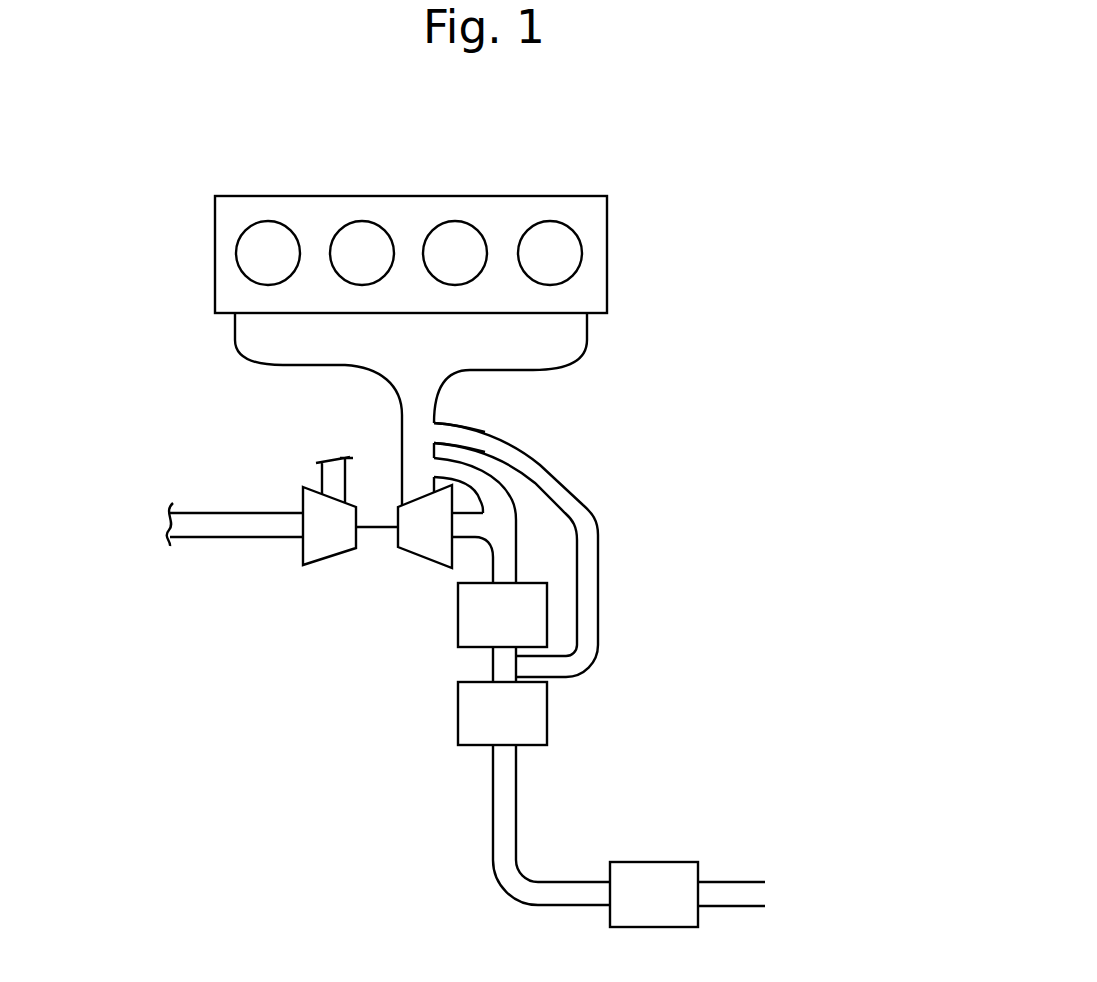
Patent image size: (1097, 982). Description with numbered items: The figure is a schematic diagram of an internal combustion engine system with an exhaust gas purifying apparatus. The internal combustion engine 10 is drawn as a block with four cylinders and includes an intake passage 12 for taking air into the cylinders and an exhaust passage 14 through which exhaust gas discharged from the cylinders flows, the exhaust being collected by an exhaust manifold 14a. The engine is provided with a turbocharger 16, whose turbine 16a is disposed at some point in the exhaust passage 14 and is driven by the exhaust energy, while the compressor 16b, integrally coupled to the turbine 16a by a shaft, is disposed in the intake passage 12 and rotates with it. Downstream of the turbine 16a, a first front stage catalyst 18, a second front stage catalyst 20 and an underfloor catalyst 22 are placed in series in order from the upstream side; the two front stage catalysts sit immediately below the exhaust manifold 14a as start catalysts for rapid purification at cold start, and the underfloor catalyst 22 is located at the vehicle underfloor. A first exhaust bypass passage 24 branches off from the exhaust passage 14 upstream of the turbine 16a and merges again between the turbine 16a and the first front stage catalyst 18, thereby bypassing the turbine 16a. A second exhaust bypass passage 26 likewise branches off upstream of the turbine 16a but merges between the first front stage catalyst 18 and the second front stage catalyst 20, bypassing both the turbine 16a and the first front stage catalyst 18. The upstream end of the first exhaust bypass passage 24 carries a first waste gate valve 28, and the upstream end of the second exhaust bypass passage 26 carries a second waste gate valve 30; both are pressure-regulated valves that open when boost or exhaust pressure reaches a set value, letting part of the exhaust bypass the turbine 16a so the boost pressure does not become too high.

The internal combustion engine 10 is at (599, 181).
The intake passage 12 is at (322, 483).
The exhaust passage 14 is at (402, 484).
The exhaust manifold 14a is at (257, 347).
The turbocharger 16 is at (349, 568).
The turbine 16a is at (410, 552).
The compressor 16b is at (305, 563).
The first front stage catalyst (S/C1) 18 is at (458, 637).
The second front stage catalyst (S/C2) 20 is at (458, 717).
The underfloor catalyst (U/F) 22 is at (652, 862).
The first exhaust bypass passage 24 is at (502, 498).
The second exhaust bypass passage 26 is at (574, 488).
The first waste gate valve 28 is at (434, 460).
The second waste gate valve 30 is at (434, 430).